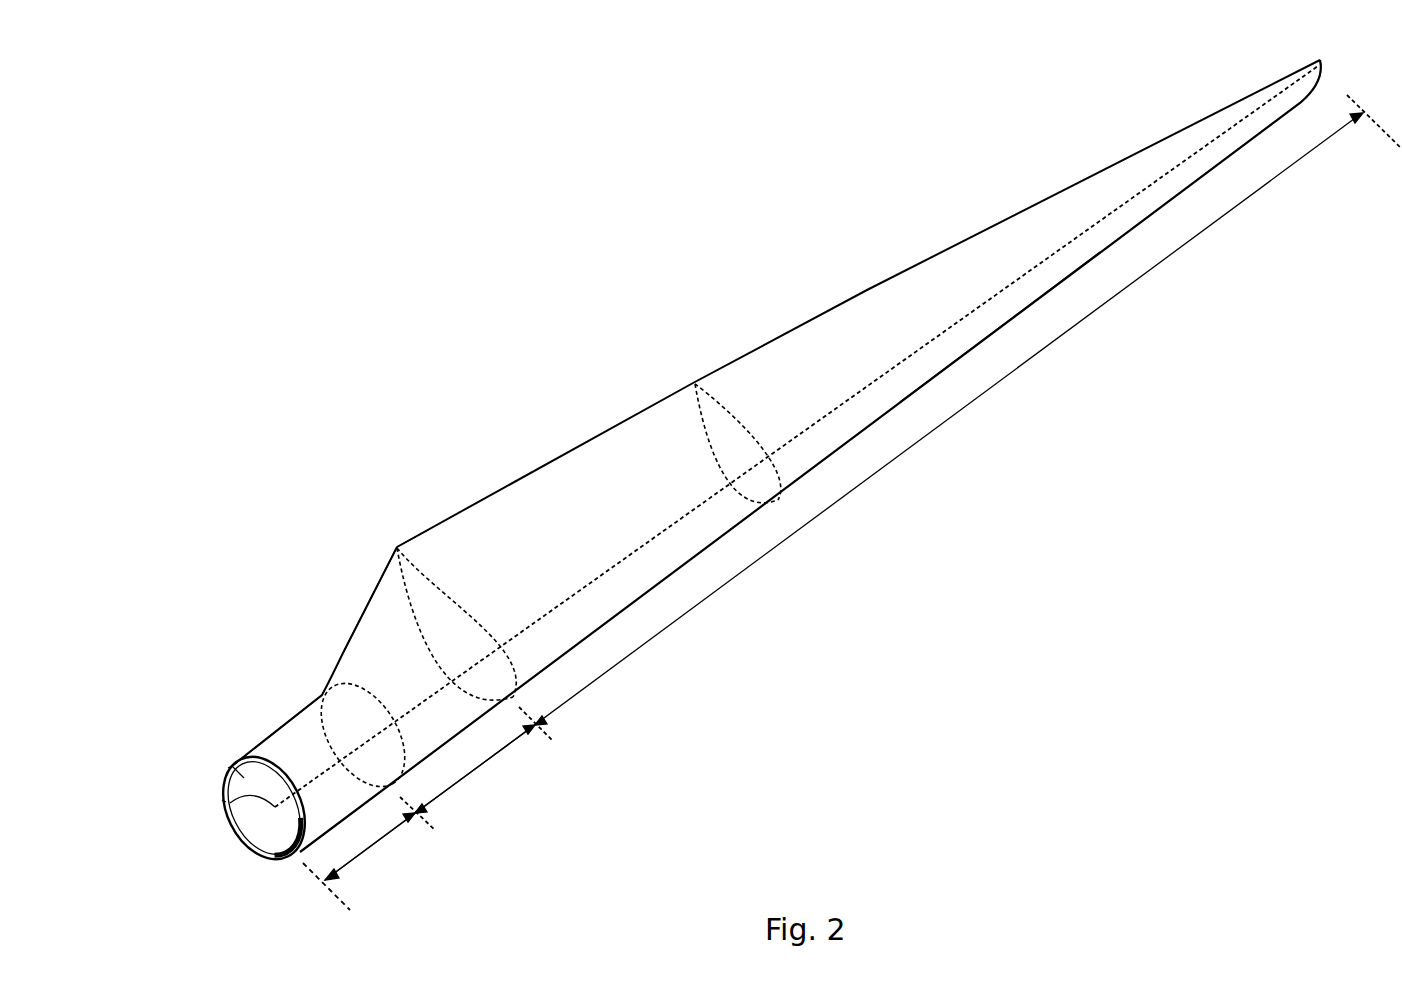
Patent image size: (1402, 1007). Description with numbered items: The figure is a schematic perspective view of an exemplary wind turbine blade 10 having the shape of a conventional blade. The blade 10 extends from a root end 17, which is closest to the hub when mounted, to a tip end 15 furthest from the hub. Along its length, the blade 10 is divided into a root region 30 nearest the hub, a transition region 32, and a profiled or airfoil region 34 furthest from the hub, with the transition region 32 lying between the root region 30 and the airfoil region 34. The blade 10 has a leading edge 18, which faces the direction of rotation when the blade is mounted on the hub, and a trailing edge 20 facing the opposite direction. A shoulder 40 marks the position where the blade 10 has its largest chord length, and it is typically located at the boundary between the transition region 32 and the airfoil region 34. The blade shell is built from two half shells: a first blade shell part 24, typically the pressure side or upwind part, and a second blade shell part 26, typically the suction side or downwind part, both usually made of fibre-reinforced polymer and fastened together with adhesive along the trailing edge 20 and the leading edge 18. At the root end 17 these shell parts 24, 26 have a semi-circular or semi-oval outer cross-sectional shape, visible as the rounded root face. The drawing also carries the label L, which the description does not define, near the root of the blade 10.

The wind turbine blade 10 is at (580, 314).
The tip end 15 is at (1320, 60).
The root end 17 is at (232, 767).
The leading edge 18 is at (990, 337).
The trailing edge 20 is at (867, 292).
The first blade shell part 24 is at (257, 762).
The second blade shell part 26 is at (255, 834).
The root region 30 is at (374, 845).
The transition region 32 is at (480, 767).
The airfoil region 34 is at (870, 478).
The shoulder 40 is at (397, 547).
The longitudinal axis L is at (228, 800).